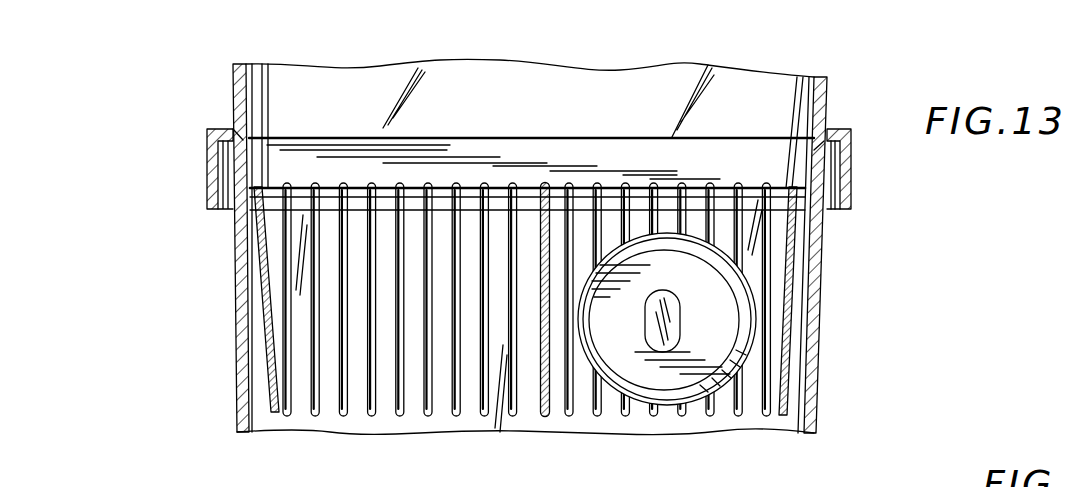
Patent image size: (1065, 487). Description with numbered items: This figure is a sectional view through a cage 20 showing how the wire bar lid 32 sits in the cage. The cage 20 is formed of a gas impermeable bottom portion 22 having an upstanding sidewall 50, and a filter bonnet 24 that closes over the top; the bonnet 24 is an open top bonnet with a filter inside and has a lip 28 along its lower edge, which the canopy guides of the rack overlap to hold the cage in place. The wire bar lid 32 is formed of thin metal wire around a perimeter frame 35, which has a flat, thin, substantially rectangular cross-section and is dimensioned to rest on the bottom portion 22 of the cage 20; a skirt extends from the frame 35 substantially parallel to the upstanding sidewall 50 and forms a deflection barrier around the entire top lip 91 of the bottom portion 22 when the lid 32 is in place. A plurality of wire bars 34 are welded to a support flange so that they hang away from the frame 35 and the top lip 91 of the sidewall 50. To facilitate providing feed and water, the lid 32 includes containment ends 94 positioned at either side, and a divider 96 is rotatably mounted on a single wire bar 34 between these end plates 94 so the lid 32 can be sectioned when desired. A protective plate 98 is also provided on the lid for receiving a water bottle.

The cage level barrier 20 is at (204, 135).
The bottom portion 22 is at (238, 376).
The filter bonnet 24 is at (829, 91).
The lip 28 is at (851, 193).
The wire bar lid 32 is at (478, 420).
The wire bars 34 is at (379, 425).
The perimeter frame 35 is at (243, 139).
The upstanding sidewall 50 is at (238, 289).
The top lip 91 is at (828, 154).
The containment ends 94 is at (268, 433).
The divider 96 is at (553, 408).
The protective plate 98 is at (723, 331).